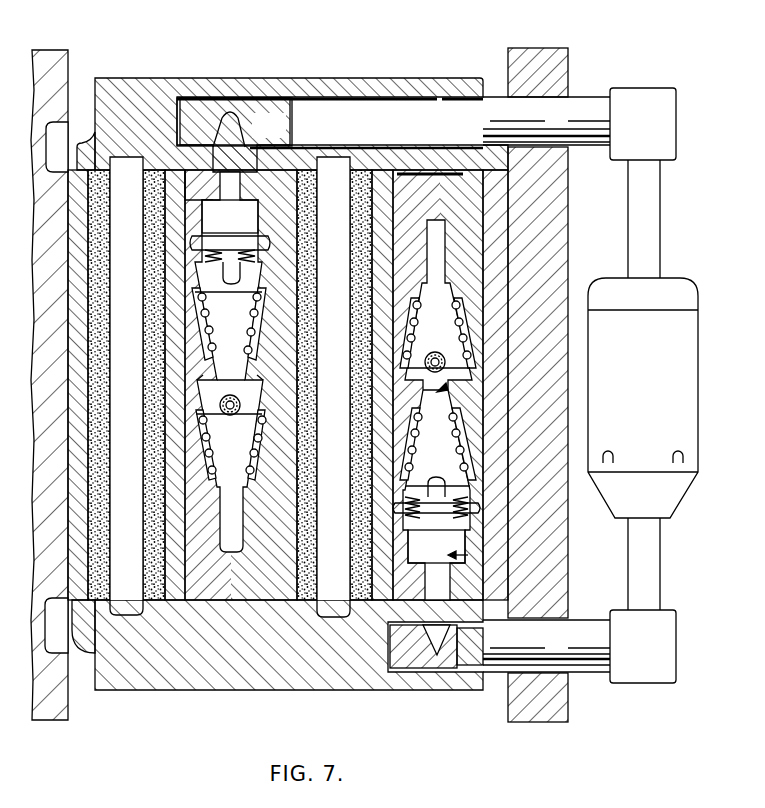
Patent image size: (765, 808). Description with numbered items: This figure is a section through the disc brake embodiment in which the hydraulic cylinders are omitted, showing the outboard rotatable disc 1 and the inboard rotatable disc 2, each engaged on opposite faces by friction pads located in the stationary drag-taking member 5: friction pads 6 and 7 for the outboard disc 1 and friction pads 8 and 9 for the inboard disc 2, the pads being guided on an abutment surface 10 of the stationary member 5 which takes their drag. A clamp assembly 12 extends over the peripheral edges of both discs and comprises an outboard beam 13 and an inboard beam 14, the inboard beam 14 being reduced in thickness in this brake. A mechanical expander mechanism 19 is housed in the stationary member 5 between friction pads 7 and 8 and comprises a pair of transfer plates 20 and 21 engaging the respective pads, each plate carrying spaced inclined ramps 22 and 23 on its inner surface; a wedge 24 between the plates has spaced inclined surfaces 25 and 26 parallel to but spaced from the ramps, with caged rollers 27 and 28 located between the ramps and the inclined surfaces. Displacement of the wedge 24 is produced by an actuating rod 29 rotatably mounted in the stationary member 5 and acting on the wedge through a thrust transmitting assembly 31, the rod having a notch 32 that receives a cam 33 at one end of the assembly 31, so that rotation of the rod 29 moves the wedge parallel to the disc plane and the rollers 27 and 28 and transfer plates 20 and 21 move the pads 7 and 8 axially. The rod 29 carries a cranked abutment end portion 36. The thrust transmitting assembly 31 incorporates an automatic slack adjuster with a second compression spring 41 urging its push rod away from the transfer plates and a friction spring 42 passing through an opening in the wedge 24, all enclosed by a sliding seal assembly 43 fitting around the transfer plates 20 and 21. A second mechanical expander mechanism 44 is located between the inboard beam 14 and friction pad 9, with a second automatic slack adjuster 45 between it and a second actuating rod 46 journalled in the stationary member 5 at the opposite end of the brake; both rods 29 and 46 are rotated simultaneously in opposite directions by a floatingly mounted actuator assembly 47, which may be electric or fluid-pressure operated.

The outboard rotatable disc 1 is at (132, 597).
The inboard rotatable disc 2 is at (338, 597).
The stationary drag-taking member 5 is at (250, 673).
The friction pad 6 is at (93, 150).
The friction pad 7 is at (157, 195).
The friction pad 8 is at (307, 182).
The friction pad 9 is at (357, 185).
The abutment surface 10 is at (184, 140).
The clamp assembly 12 is at (540, 55).
The outboard beam 13 is at (51, 407).
The inboard beam 14 is at (545, 198).
The mechanical expander mechanism 19 is at (269, 125).
The transfer plate 20 is at (474, 200).
The transfer plate 21 is at (392, 192).
The inclined ramp 22 is at (423, 286).
The inclined ramp 23 is at (205, 346).
The wedge 24 is at (215, 403).
The inclined surface 25 is at (205, 462).
The inclined surface 26 is at (200, 290).
The caged rollers 27 is at (200, 487).
The caged rollers 28 is at (200, 322).
The actuating rod 29 is at (441, 118).
The thrust transmitting assembly 31 is at (270, 185).
The cam surface or notch 32 is at (256, 118).
The cam 33 is at (226, 120).
The cranked abutment end portion 36 is at (631, 105).
The second compression spring 41 is at (275, 240).
The friction spring 42 is at (252, 423).
The sliding seal assembly 43 is at (195, 235).
The second mechanical expander mechanism 44 is at (447, 365).
The second automatic slack adjuster 45 is at (468, 552).
The second actuating rod 46 is at (578, 655).
The floatingly mounted actuator assembly 47 is at (683, 340).